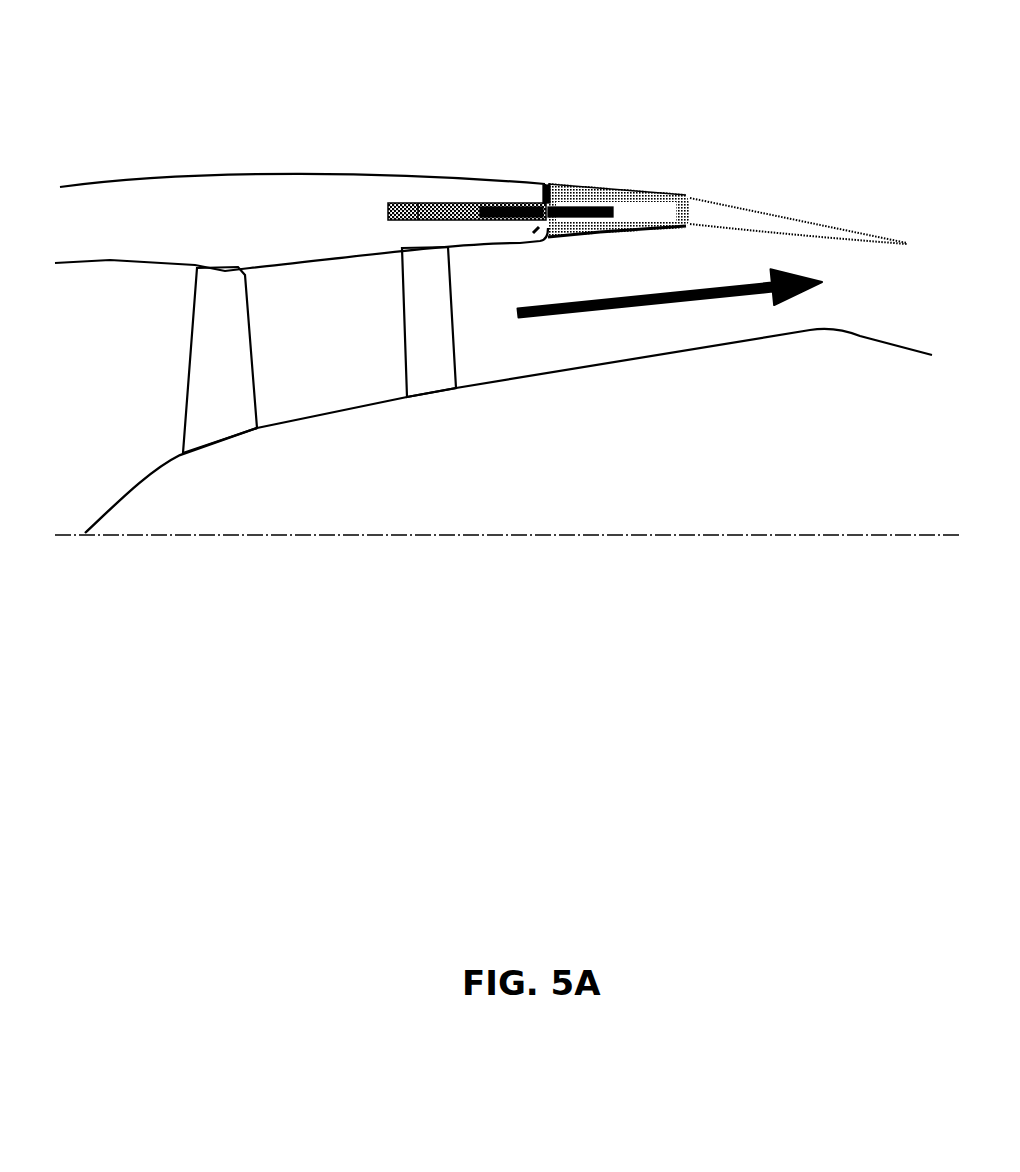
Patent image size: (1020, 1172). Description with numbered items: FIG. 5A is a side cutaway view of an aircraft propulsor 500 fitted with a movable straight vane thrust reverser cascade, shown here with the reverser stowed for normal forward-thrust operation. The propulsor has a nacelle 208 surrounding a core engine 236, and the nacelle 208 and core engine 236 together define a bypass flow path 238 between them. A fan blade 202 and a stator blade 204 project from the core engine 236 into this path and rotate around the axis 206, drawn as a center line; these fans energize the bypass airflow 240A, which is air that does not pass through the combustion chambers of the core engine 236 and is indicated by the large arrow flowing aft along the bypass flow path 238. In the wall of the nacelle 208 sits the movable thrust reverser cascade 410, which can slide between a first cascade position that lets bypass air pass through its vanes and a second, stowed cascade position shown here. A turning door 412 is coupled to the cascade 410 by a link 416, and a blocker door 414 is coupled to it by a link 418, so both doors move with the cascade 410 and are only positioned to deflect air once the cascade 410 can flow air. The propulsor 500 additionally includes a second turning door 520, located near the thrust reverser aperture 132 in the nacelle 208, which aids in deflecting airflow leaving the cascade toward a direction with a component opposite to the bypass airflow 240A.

The aircraft propulsor 500 is at (140, 103).
The nacelle 208 is at (320, 173).
The fan blade 202 is at (190, 347).
The stator blade 204 is at (457, 368).
The core engine 236 is at (157, 472).
The bypass flow path 238 is at (330, 365).
The axis 206 is at (365, 533).
The bypass airflow 240A is at (704, 293).
The movable thrust reverser cascade 410 is at (482, 203).
The turning door 412 is at (563, 182).
The second turning door 520 is at (580, 187).
The thrust reverser aperture 132 is at (587, 190).
The link 416 is at (597, 193).
The blocker door 414 is at (577, 237).
The link 418 is at (597, 225).